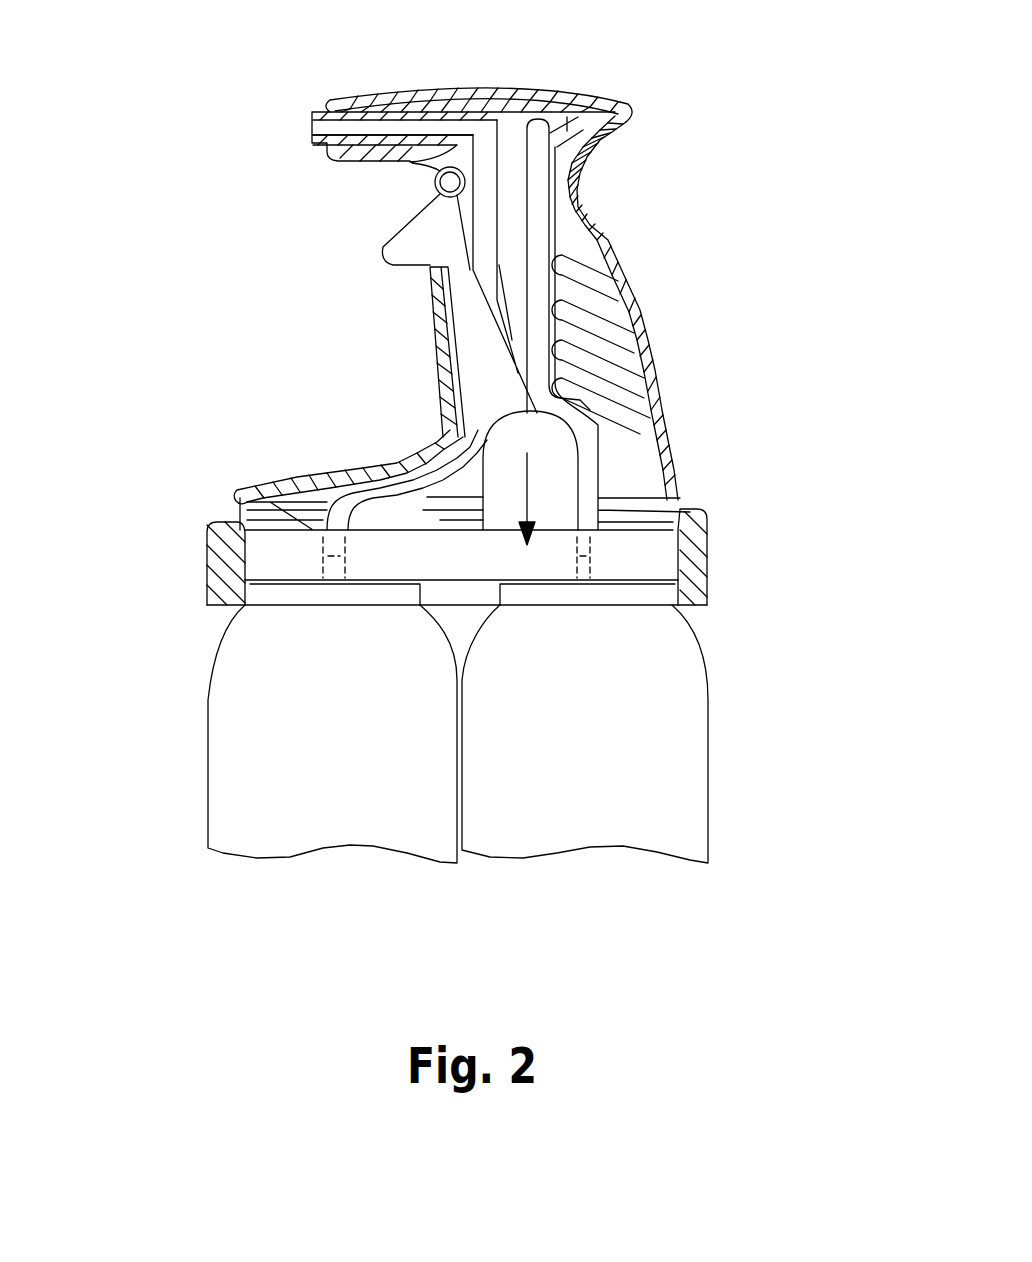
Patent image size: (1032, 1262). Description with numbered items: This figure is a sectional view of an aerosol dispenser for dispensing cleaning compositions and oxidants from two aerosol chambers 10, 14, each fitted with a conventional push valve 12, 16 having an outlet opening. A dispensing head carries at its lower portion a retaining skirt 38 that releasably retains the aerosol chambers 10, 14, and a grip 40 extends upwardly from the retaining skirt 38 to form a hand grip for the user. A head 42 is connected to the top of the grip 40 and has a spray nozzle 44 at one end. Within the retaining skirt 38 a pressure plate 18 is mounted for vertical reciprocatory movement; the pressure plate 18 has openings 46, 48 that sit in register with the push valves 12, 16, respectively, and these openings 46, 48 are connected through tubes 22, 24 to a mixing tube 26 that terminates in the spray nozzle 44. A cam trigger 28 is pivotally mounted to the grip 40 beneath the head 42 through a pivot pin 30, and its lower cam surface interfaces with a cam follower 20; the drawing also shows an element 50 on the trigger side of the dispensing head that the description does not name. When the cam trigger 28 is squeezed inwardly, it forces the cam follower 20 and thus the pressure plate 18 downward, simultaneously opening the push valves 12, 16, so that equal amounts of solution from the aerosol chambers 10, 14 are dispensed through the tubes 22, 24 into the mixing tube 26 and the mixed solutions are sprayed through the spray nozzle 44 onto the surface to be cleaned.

The aerosol chamber 10 is at (228, 678).
The push valve 12 is at (590, 572).
The aerosol chamber 14 is at (678, 687).
The push valve 16 is at (332, 567).
The pressure plate 18 is at (628, 537).
The cam follower 20 is at (545, 445).
The tube 22 is at (540, 232).
The tube 24 is at (482, 175).
The mixing tube 26 is at (389, 128).
The cam trigger 28 is at (392, 248).
The pivot pin 30 is at (445, 179).
The retaining skirt 38 is at (707, 537).
The grip 40 is at (626, 268).
The head 42 is at (500, 93).
The spray nozzle 44 is at (302, 113).
The opening 46 is at (592, 537).
The opening 48 is at (237, 500).
The rib 50 is at (430, 437).